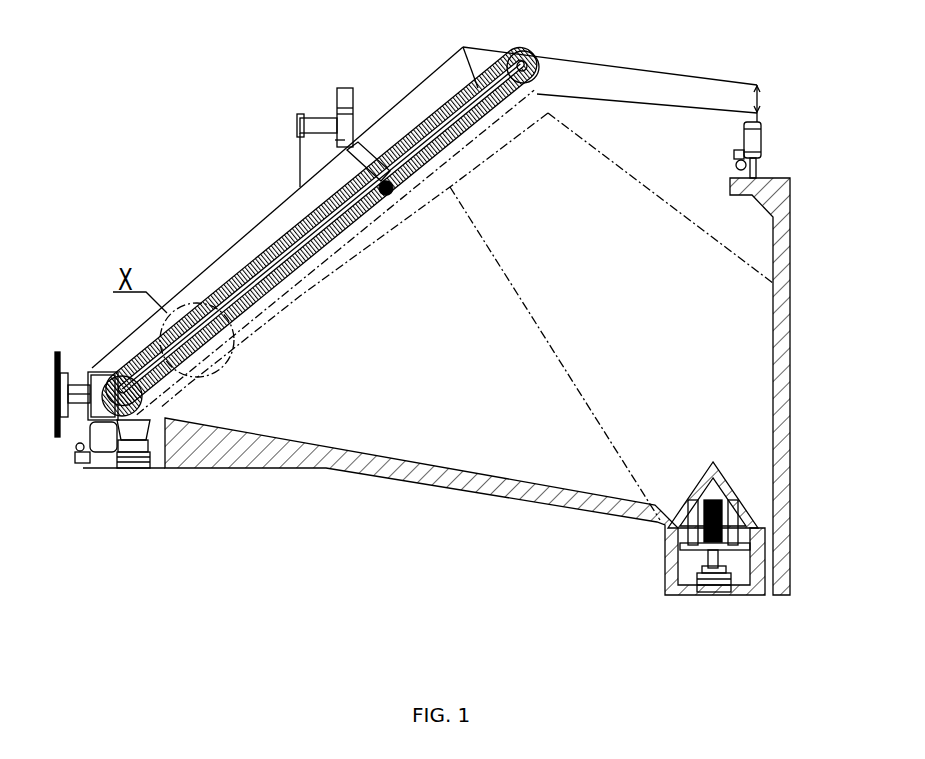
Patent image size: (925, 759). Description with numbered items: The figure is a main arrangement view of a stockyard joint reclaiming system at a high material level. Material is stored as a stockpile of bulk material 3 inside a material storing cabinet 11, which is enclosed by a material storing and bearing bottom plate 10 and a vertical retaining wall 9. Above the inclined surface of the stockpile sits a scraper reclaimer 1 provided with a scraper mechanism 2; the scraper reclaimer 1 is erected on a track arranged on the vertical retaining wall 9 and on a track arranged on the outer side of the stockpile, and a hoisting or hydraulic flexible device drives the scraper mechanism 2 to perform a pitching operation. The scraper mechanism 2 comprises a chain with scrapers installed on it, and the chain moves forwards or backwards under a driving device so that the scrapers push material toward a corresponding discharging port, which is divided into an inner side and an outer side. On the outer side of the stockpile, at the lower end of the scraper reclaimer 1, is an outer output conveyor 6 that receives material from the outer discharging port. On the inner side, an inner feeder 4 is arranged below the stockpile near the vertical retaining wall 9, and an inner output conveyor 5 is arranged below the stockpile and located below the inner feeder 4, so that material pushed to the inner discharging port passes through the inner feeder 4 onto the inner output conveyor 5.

The scraper reclaimer 1 is at (424, 231).
The scraper mechanism 2 is at (320, 230).
The bulk material 3 is at (466, 271).
The inner feeder 4 is at (750, 498).
The inner output conveyor 5 is at (764, 594).
The outer output conveyor 6 is at (102, 437).
The vertical retaining wall 9 is at (781, 386).
The material storing and bearing bottom plate 10 is at (424, 506).
The material storing cabinet 11 is at (294, 462).